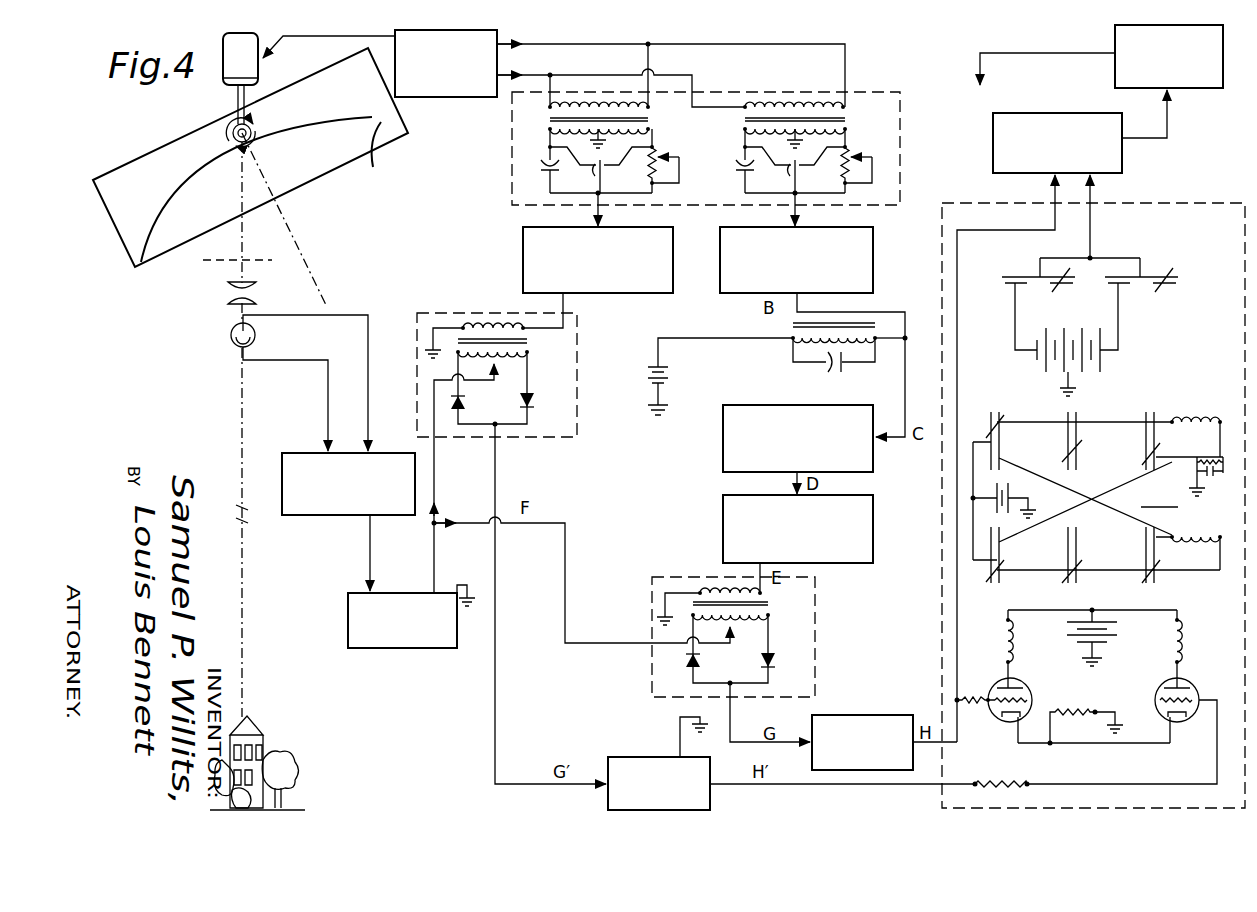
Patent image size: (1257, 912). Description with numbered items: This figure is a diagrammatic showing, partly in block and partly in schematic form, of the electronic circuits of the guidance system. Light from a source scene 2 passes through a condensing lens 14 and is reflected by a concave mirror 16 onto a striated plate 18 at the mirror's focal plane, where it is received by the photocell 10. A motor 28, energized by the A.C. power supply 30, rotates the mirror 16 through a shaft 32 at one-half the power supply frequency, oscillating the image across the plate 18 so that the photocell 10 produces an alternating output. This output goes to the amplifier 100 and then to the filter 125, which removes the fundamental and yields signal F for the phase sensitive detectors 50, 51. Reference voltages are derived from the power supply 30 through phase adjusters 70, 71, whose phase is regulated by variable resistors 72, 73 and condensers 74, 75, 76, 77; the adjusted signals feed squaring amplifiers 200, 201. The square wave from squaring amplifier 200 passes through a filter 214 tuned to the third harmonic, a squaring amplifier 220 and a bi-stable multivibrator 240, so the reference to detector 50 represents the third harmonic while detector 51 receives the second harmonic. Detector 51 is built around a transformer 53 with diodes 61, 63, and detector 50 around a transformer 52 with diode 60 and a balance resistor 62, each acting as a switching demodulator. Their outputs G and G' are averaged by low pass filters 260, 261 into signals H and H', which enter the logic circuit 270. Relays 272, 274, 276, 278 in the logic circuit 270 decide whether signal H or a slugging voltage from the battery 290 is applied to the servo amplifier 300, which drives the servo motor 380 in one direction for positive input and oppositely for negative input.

The source scene 2 is at (278, 737).
The photocell 10 is at (230, 337).
The condensing lens 14 is at (227, 294).
The concave mirror 16 is at (250, 157).
The striated plate 18 is at (280, 261).
The motor 28 is at (236, 82).
The A.C. power supply 30 is at (432, 100).
The shaft 32 is at (236, 104).
The phase sensitive detector 50 is at (820, 606).
The phase sensitive detector 51 is at (445, 311).
The transformer 52 is at (771, 597).
The transformer 53 is at (529, 336).
The diode 60 is at (777, 660).
The diode 61 is at (536, 398).
The resistor 62 is at (701, 662).
The diode 63 is at (466, 402).
The phase adjuster 70 is at (853, 82).
The phase adjuster 71 is at (511, 140).
The variable resistor 72 is at (850, 151).
The variable resistor 73 is at (657, 151).
The condenser 74 is at (743, 170).
The condenser 75 is at (548, 170).
The condenser 76 is at (795, 170).
The condenser 77 is at (601, 170).
The amplifier 100 is at (322, 518).
The filter 125 is at (392, 651).
The squaring amplifier 200 is at (893, 232).
The squaring amplifier 201 is at (521, 247).
The filter 214 is at (789, 350).
The squaring amplifier 220 is at (721, 439).
The bi-stable multivibrator 240 is at (721, 523).
The filter 260 is at (858, 714).
The filter 261 is at (645, 758).
The logic circuit 270 is at (1204, 213).
The relay 272 is at (1080, 451).
The relay 274 is at (1160, 441).
The relay 276 is at (1148, 271).
The relay 278 is at (1040, 262).
The battery 290 is at (1108, 358).
The servo amplifier 300 is at (991, 139).
The servo motor 380 is at (1194, 91).